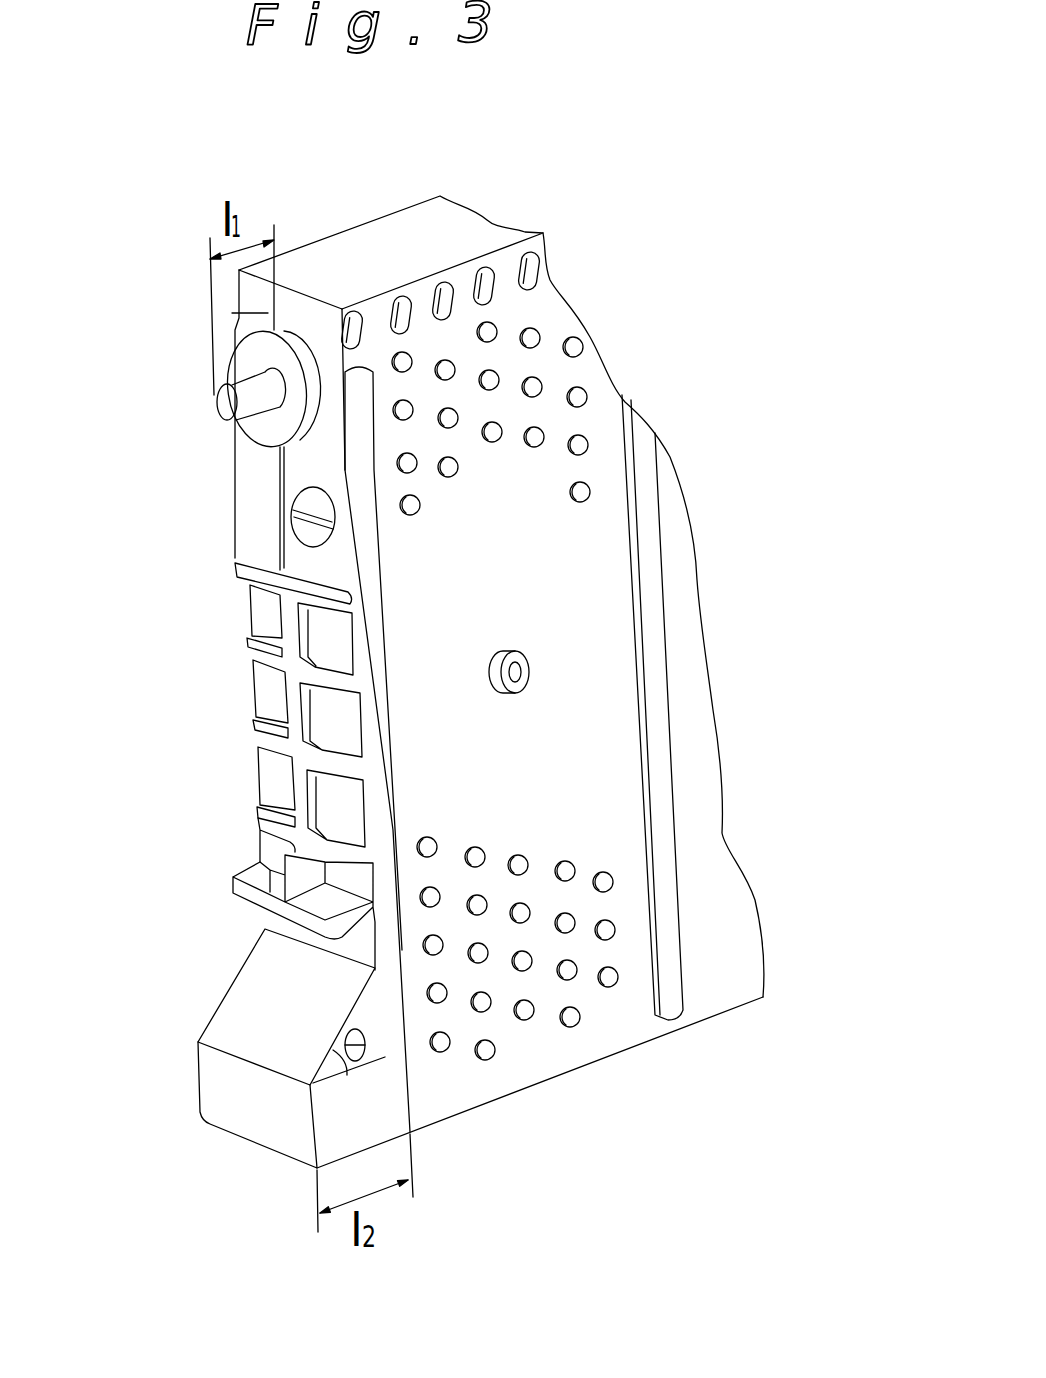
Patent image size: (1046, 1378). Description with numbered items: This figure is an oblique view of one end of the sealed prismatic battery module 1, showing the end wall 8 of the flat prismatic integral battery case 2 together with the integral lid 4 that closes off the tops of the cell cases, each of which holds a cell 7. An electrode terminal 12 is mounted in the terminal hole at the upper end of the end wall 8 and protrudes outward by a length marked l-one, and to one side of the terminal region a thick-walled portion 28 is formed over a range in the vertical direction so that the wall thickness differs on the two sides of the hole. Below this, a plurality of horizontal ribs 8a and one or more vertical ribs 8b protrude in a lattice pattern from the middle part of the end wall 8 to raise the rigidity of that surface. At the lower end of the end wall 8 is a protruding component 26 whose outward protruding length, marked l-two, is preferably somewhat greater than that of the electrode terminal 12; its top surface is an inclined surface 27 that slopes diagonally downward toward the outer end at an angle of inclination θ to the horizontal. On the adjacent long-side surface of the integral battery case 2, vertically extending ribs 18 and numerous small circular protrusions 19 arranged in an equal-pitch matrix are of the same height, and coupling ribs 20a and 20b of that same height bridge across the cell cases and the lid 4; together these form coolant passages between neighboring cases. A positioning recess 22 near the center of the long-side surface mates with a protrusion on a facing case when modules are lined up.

The sealed prismatic battery module 1 is at (178, 380).
The integral battery case 2 is at (730, 923).
The integral lid 4 is at (381, 248).
The cell 7 is at (584, 1085).
The end wall 8 is at (272, 620).
The horizontal ribs 8a is at (260, 735).
The vertical ribs 8b is at (300, 790).
The electrode terminal 12 is at (250, 395).
The ribs 18 is at (647, 547).
The circular protrusions 19 is at (588, 437).
The coupling rib 20a is at (348, 312).
The coupling rib 20b is at (532, 265).
The recess 22 is at (529, 660).
The protruding component 26 is at (273, 1098).
The inclined surface 27 is at (268, 1000).
The thick-walled portion 28 is at (253, 487).